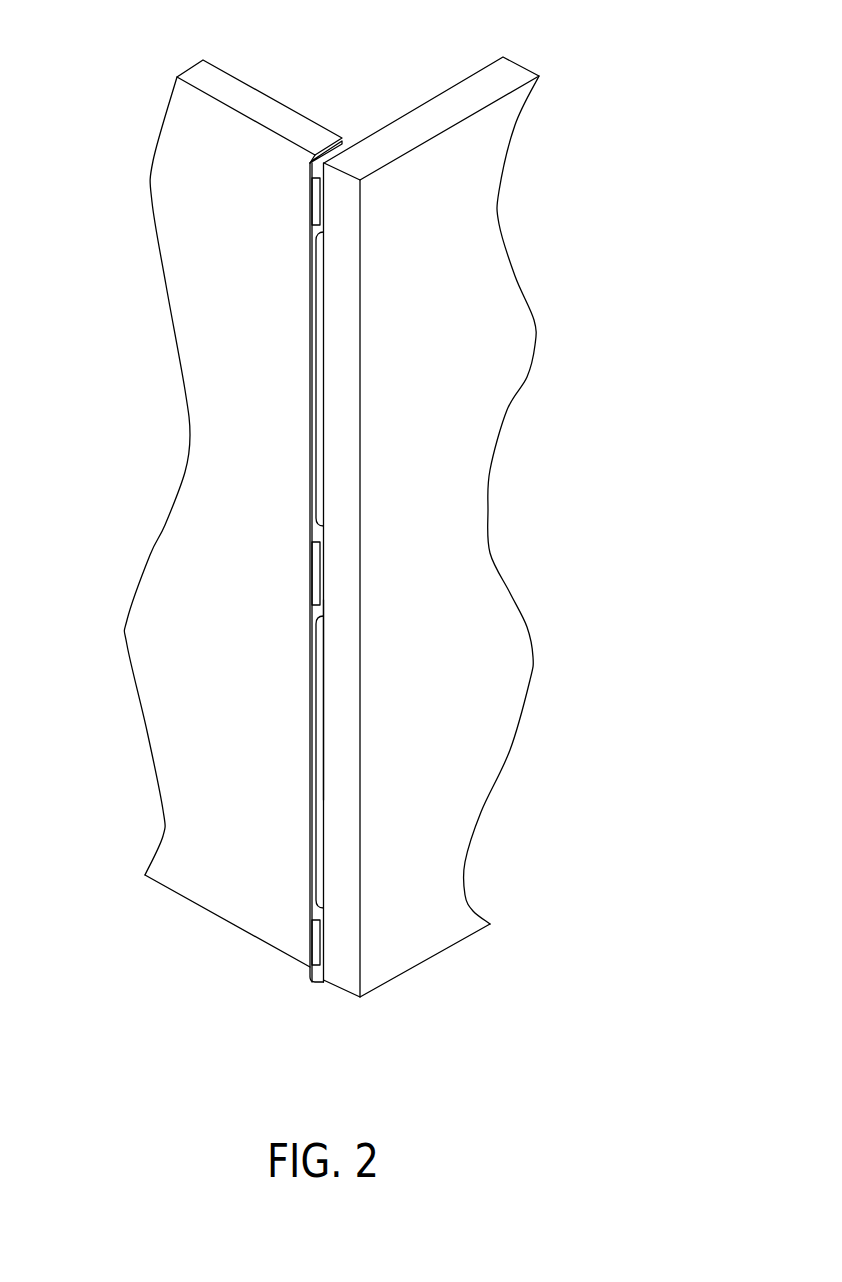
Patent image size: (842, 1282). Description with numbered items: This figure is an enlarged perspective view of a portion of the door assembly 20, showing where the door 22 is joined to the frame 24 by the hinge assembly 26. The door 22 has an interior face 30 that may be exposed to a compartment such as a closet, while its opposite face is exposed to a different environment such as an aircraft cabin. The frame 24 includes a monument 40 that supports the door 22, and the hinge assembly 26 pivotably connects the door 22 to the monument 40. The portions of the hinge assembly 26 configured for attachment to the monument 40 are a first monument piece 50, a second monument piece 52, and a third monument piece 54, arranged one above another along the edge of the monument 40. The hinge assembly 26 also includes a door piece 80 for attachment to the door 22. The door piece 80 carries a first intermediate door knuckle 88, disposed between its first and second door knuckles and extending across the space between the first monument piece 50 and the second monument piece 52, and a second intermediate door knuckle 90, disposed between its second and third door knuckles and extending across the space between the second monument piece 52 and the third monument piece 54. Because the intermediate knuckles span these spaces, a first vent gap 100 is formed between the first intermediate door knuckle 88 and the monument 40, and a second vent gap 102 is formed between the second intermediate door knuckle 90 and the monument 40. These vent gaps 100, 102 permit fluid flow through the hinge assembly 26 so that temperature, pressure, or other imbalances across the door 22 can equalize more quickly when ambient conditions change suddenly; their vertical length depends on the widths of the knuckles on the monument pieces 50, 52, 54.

The door assembly 20 is at (605, 133).
The door 22 is at (208, 486).
The frame 24 is at (518, 668).
The hinge assembly 26 is at (322, 572).
The interior face 30 is at (273, 98).
The monument 40 is at (484, 527).
The first monument piece 50 is at (327, 207).
The second monument piece 52 is at (326, 582).
The third monument piece 54 is at (326, 948).
The door piece 80 is at (308, 365).
The first intermediate door knuckle 88 is at (314, 450).
The second intermediate door knuckle 90 is at (314, 735).
The first vent gap 100 is at (326, 386).
The second vent gap 102 is at (326, 766).